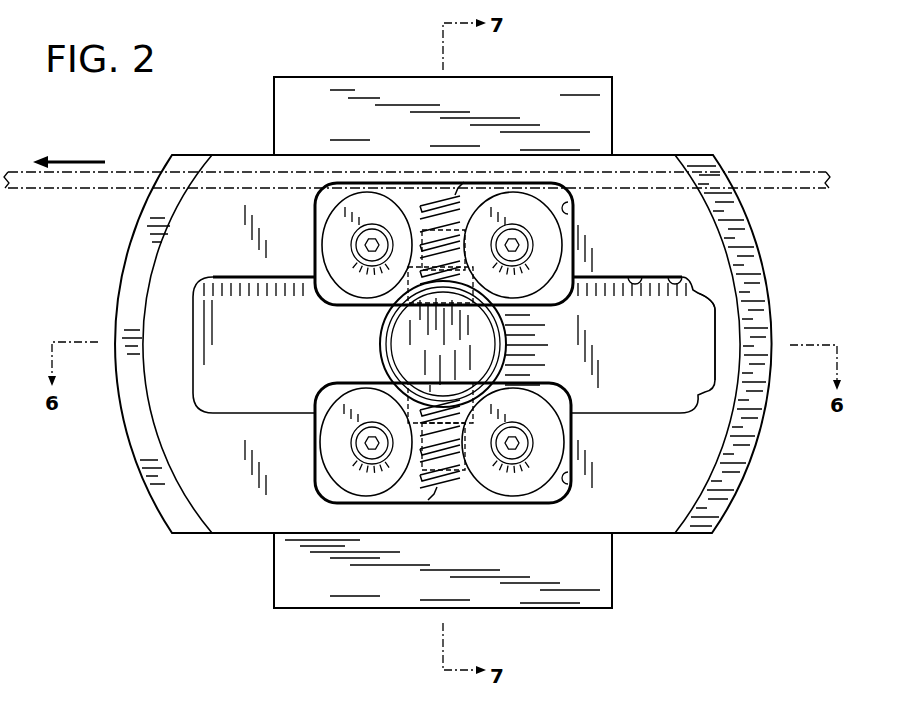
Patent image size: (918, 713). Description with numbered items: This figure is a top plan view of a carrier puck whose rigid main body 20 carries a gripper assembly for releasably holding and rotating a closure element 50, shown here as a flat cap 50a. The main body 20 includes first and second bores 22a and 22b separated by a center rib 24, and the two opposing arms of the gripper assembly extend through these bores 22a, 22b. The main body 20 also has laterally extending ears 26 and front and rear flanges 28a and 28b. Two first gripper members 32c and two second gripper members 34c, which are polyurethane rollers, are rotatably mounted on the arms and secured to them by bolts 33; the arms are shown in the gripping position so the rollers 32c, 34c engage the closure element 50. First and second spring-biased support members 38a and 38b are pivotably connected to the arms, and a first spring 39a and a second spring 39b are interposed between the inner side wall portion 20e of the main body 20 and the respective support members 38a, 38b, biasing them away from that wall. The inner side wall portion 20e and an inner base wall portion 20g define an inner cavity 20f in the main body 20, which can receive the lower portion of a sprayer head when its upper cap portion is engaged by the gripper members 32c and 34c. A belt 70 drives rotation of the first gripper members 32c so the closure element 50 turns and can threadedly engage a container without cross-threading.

The main body 20 is at (733, 437).
The inner side wall portion 20e is at (690, 283).
The inner cavity 20f is at (645, 283).
The inner base wall portion 20g is at (673, 343).
The first bore 22a is at (570, 208).
The second bore 22b is at (567, 470).
The center rib 24 is at (564, 338).
The laterally extending ears 26 is at (297, 95).
The front flange 28a is at (145, 440).
The rear flange 28b is at (717, 505).
The first gripper members 32c is at (372, 202).
The bolts 33 is at (361, 237).
The second gripper members 34c is at (358, 477).
The first spring-biased support member 38a is at (440, 268).
The second spring-biased support member 38b is at (440, 418).
The first spring 39a is at (455, 195).
The second spring 39b is at (437, 487).
The closure element 50 is at (410, 350).
The flat cap 50a is at (417, 333).
The belt 70 is at (745, 172).